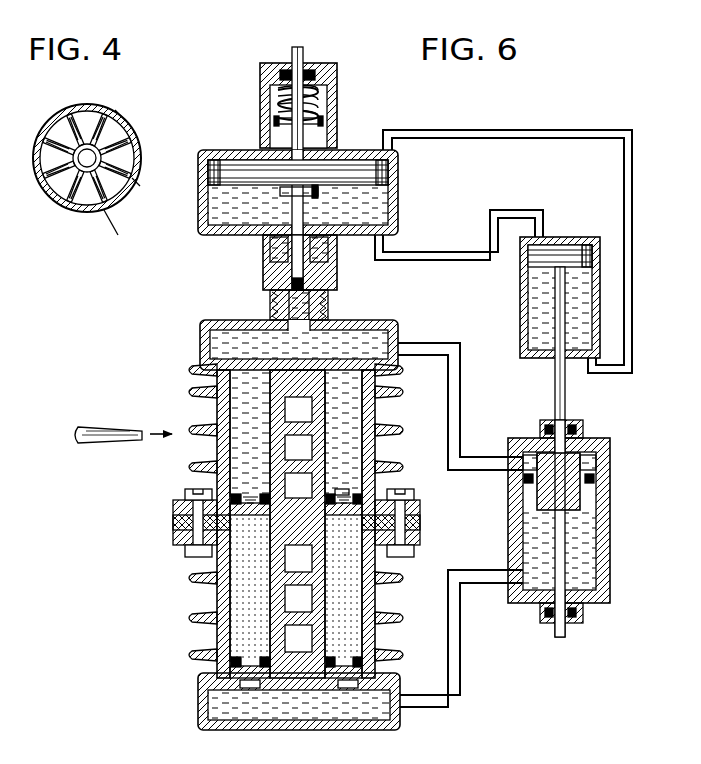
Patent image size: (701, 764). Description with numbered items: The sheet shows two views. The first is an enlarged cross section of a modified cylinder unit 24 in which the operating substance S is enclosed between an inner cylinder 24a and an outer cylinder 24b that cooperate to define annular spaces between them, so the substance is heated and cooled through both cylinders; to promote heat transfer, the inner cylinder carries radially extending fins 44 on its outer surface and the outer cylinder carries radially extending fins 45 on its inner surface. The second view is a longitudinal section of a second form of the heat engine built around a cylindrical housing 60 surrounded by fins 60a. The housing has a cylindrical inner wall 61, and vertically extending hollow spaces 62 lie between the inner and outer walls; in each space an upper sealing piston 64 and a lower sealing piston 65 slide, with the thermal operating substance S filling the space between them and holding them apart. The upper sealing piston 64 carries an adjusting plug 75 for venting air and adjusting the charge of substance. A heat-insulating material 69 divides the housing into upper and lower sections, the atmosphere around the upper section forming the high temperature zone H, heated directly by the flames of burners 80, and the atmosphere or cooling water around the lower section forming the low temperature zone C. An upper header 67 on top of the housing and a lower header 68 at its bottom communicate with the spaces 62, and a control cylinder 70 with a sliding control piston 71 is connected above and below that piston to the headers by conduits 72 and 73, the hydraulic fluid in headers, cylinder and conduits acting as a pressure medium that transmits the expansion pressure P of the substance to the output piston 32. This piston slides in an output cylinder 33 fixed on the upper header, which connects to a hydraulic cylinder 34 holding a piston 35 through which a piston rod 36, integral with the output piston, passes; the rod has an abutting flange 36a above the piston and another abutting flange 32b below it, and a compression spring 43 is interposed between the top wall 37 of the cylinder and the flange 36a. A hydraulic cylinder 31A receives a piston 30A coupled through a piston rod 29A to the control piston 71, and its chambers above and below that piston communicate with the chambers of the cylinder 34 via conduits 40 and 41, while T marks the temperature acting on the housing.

In FIG. 4, the cylinder unit 24 is at (38, 183).
In FIG. 4, the inner cylinder 24a is at (86, 200).
In FIG. 4, the outer cylinder 24b is at (113, 208).
In FIG. 4, the radially extending fins 44 is at (138, 180).
In FIG. 4, the radially extending fins 45 is at (118, 118).
In FIG. 6, the piston rod 29A is at (566, 398).
In FIG. 6, the piston 30A is at (600, 252).
In FIG. 6, the hydraulic cylinder 31A is at (600, 302).
In FIG. 6, the output piston 32 is at (295, 250).
In FIG. 6, the abutting flange 32b is at (316, 196).
In FIG. 6, the output cylinder 33 is at (333, 282).
In FIG. 6, the hydraulic cylinder 34 is at (398, 178).
In FIG. 6, the piston 35 is at (235, 168).
In FIG. 6, the piston rod 36 is at (302, 146).
In FIG. 6, the abutting flange 36a is at (280, 121).
In FIG. 6, the top wall 37 is at (337, 72).
In FIG. 6, the conduit 40 is at (548, 133).
In FIG. 6, the conduit 41 is at (452, 258).
In FIG. 6, the compression spring 43 is at (278, 84).
In FIG. 6, the cylindrical housing 60 is at (212, 406).
In FIG. 6, the fins 60a is at (388, 395).
In FIG. 6, the cylindrical inner wall 61 is at (276, 598).
In FIG. 6, the cylindrical hollow spaces 62 is at (228, 494).
In FIG. 6, the upper sealing piston 64 is at (213, 556).
In FIG. 6, the lower sealing piston 65 is at (228, 665).
In FIG. 6, the upper header 67 is at (386, 322).
In FIG. 6, the lower header 68 is at (392, 720).
In FIG. 6, the heat-insulating material 69 is at (420, 522).
In FIG. 6, the control cylinder 70 is at (610, 549).
In FIG. 6, the control piston 71 is at (596, 470).
In FIG. 6, the conduit 72 is at (460, 402).
In FIG. 6, the conduit 73 is at (460, 652).
In FIG. 6, the adjusting plug 75 is at (342, 489).
In FIG. 6, the combustor nozzles or burners 80 is at (108, 428).
In FIG. 6, the pressure direction P is at (345, 262).
In FIG. 6, the temperature T is at (200, 372).
In FIG. 6, the high temperature zone H is at (428, 455).
In FIG. 6, the thermal operating substance S is at (348, 588).
In FIG. 6, the low temperature zone C is at (430, 633).